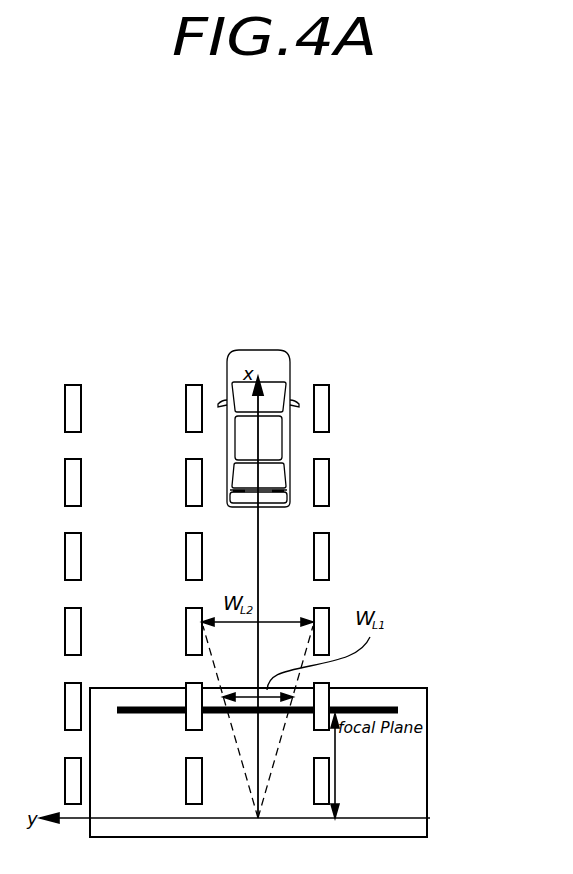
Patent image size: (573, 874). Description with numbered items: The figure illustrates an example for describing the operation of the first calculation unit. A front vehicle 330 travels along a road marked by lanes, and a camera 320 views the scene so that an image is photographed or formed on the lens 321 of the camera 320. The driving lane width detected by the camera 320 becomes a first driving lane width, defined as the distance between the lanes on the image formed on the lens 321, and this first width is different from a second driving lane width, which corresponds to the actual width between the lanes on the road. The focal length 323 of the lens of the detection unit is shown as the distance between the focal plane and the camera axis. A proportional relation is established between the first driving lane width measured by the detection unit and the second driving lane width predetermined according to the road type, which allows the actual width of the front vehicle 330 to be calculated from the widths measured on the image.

The front vehicle 330 is at (262, 351).
The camera 320 is at (428, 703).
The lens 321 is at (389, 705).
The focal length 323 is at (335, 768).